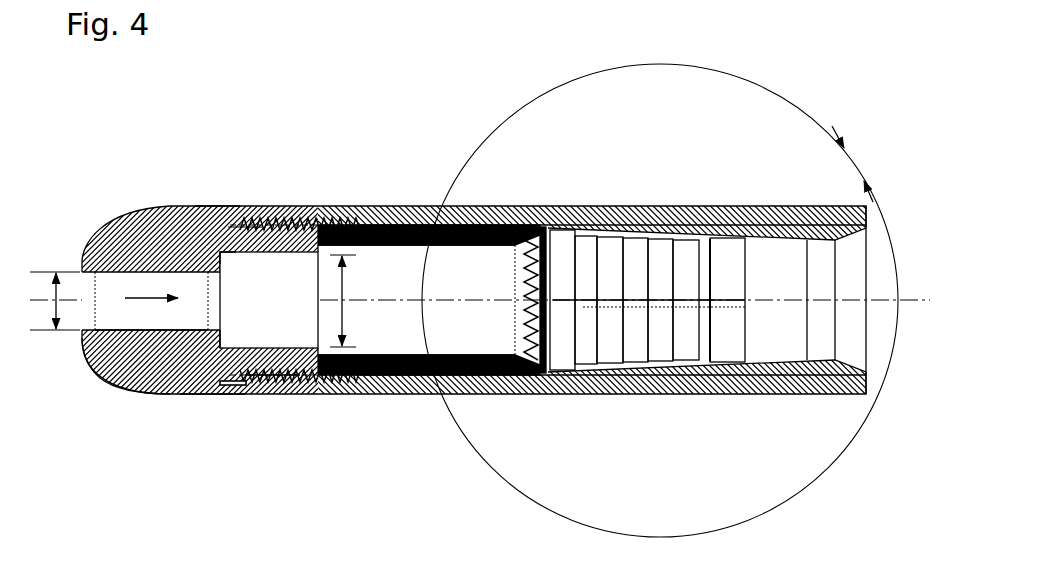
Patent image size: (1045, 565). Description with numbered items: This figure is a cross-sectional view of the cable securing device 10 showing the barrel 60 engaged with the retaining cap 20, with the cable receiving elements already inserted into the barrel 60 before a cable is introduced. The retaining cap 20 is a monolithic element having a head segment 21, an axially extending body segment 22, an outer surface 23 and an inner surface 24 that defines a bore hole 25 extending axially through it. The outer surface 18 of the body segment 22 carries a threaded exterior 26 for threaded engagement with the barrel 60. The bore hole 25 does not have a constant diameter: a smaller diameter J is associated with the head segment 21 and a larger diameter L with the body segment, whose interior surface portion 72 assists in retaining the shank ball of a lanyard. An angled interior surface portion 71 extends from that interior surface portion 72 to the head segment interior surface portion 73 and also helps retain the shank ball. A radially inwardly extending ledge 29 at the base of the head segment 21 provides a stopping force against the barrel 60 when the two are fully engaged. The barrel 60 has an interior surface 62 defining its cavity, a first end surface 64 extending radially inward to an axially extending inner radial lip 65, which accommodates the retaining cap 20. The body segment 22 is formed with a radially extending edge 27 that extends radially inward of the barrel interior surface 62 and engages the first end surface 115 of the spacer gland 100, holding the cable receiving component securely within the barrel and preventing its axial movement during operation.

The cable securing device 10 is at (480, 280).
The outer surface 18 is at (253, 217).
The retaining cap 20 is at (170, 205).
The head segment 21 is at (95, 363).
The body segment 22 is at (283, 228).
The outer surface 23 is at (118, 387).
The inner surface 24 is at (258, 348).
The bore hole 25 is at (148, 289).
The threaded exterior 26 is at (263, 383).
The radially extending edge 27 is at (322, 245).
The radially inwardly extending ledge 29 is at (215, 212).
The barrel 60 is at (418, 205).
The interior surface 62 is at (427, 380).
The first end surface 64 is at (213, 398).
The inner radial lip 65 is at (223, 390).
The angled interior surface portion 71 is at (213, 332).
The interior surface portion 72 is at (243, 255).
The head segment interior surface portion 73 is at (130, 330).
The spacer gland 100 is at (387, 373).
The first end surface 115 is at (317, 228).